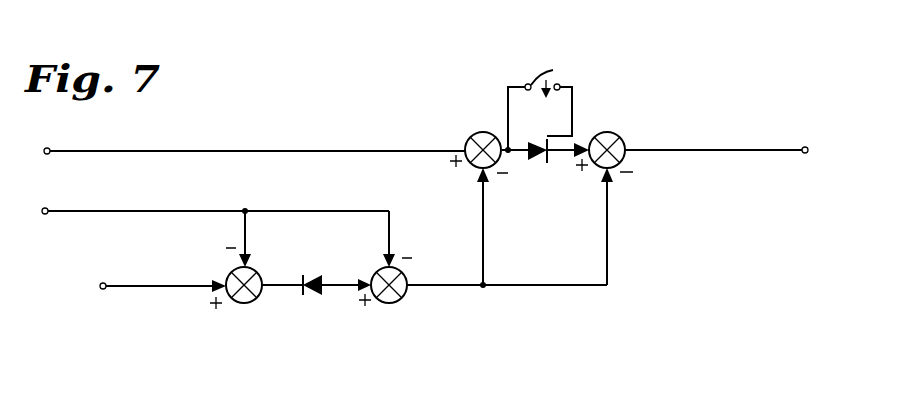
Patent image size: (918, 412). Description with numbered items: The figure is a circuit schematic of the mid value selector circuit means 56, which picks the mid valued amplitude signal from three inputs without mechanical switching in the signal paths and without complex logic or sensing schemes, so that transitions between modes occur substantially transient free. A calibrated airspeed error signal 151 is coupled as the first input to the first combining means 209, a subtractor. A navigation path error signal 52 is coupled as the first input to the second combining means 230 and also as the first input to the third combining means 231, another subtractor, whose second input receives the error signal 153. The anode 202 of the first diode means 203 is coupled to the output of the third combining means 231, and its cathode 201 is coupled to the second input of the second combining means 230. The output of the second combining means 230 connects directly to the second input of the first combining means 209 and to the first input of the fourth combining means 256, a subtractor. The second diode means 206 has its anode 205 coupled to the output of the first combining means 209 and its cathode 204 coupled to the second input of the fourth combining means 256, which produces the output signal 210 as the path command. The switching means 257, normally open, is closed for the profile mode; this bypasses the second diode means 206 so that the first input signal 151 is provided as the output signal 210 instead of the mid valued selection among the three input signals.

The calibrated airspeed error signal 151 is at (50, 154).
The navigation path error signal 52 is at (48, 214).
The error signal 153 is at (104, 283).
The third combining means 231 is at (243, 304).
The first diode means 203 is at (342, 322).
The anode 202 is at (301, 275).
The cathode 201 is at (323, 278).
The second combining means 230 is at (405, 298).
The mid value selector circuit means 56 is at (565, 268).
The first combining means 209 is at (478, 132).
The second diode means 206 is at (563, 189).
The anode 205 is at (527, 143).
The cathode 204 is at (574, 137).
The switching means 257 is at (545, 74).
The fourth combining means 256 is at (622, 133).
The output signal 210 is at (806, 154).